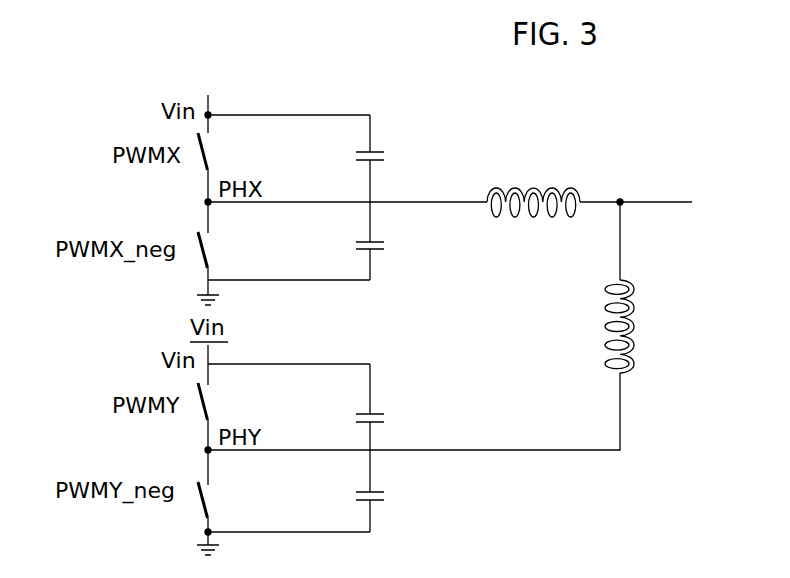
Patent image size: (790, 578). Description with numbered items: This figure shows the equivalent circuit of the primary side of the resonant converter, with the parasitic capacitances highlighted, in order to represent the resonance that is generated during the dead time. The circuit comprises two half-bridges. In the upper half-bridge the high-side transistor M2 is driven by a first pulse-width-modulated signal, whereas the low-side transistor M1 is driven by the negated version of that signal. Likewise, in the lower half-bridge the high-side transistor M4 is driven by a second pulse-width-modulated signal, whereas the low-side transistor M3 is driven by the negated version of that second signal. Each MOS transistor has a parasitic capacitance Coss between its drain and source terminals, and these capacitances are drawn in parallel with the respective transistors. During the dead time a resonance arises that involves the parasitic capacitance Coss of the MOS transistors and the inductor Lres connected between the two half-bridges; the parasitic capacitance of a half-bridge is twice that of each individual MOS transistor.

The low-side transistor M1 is at (283, 253).
The high-side transistor M2 is at (284, 148).
The low-side transistor M3 is at (283, 502).
The high-side transistor M4 is at (284, 397).
The inductor Lres is at (533, 190).
The parasitic capacitance Coss is at (398, 323).